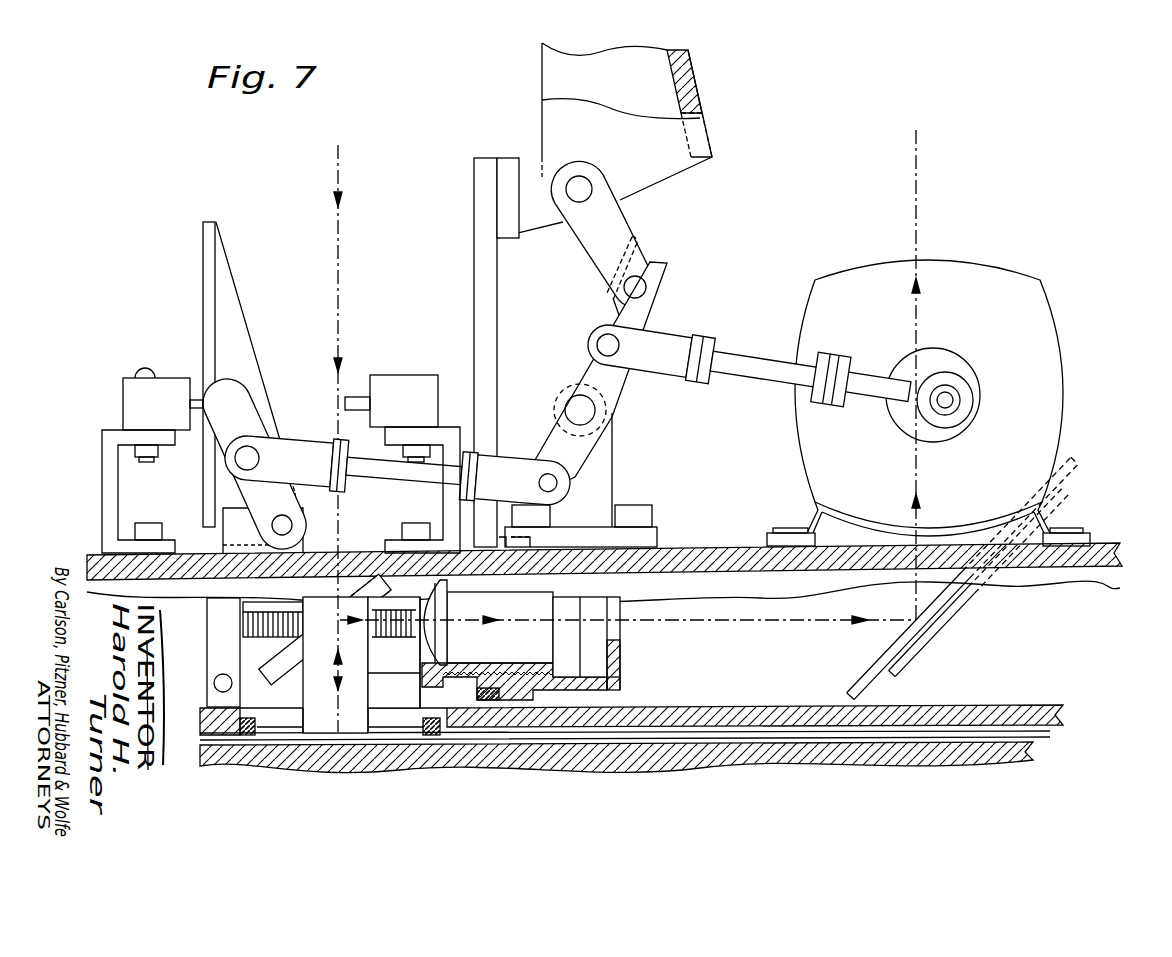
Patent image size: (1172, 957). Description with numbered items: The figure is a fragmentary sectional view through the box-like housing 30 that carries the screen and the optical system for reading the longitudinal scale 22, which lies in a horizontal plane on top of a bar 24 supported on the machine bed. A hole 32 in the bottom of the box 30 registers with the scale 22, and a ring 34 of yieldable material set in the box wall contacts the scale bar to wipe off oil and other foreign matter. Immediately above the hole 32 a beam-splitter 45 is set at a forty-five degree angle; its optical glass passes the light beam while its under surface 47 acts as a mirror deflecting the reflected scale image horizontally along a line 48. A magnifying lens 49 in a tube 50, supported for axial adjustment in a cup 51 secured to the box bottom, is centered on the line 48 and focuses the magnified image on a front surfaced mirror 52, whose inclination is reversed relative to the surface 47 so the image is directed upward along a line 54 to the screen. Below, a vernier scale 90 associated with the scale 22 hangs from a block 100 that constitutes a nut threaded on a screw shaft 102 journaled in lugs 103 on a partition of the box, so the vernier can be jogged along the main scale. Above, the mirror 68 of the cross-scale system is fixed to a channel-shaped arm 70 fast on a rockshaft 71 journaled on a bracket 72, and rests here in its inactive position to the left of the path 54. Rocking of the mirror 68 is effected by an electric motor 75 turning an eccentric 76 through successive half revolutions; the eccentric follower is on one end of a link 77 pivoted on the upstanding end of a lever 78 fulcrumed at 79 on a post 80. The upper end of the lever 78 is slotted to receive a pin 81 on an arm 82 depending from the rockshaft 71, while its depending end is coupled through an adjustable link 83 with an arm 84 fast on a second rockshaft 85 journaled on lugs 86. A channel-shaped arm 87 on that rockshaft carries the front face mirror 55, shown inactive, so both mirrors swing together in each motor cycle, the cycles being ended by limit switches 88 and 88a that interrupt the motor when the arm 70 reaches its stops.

The linear scale 22 is at (486, 744).
The bar 24 is at (606, 757).
The box-like housing 30 is at (1104, 551).
The hole 32 is at (258, 740).
The rings of yieldable material 34 is at (246, 740).
The beam-splitter 45 is at (288, 644).
The under surface 47 is at (328, 644).
The line 48 is at (646, 620).
The magnifying lens 49 is at (441, 610).
The tube 50 is at (526, 668).
The cup 51 is at (620, 689).
The front surfaced mirror 52 is at (877, 657).
The line 54 is at (920, 228).
The front face mirror 55 is at (203, 330).
The mirror 68 is at (682, 84).
The channel-shaped arm 70 is at (548, 112).
The rockshaft 71 is at (586, 183).
The bracket 72 is at (479, 292).
The electric motor 75 is at (989, 277).
The eccentric 76 is at (953, 400).
The link 77 is at (748, 363).
The lever 78 is at (616, 385).
The fulcrum 79 is at (566, 408).
The post 80 is at (614, 458).
The pin 81 is at (647, 288).
The arm 82 is at (631, 250).
The adjustable link 83 is at (432, 479).
The arm 84 is at (256, 432).
The rockshaft 85 is at (292, 525).
The lugs 86 is at (340, 532).
The channel-shaped arm 87 is at (259, 385).
The limit switch 88 is at (429, 381).
The limit switch 88a is at (188, 378).
The vernier scale 90 is at (318, 726).
The block 100 is at (366, 660).
The screw shaft 102 is at (394, 652).
The lugs 103 is at (207, 655).